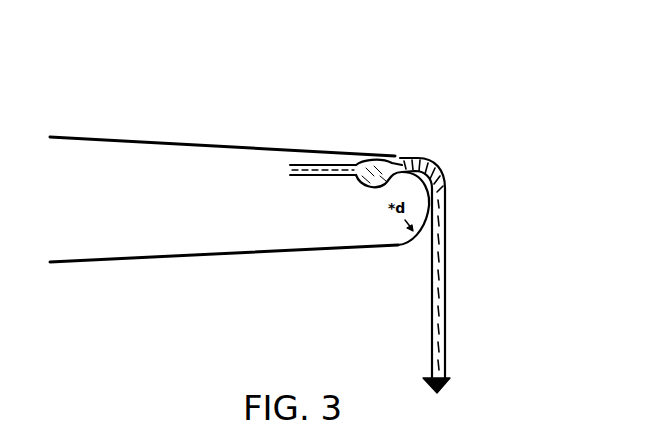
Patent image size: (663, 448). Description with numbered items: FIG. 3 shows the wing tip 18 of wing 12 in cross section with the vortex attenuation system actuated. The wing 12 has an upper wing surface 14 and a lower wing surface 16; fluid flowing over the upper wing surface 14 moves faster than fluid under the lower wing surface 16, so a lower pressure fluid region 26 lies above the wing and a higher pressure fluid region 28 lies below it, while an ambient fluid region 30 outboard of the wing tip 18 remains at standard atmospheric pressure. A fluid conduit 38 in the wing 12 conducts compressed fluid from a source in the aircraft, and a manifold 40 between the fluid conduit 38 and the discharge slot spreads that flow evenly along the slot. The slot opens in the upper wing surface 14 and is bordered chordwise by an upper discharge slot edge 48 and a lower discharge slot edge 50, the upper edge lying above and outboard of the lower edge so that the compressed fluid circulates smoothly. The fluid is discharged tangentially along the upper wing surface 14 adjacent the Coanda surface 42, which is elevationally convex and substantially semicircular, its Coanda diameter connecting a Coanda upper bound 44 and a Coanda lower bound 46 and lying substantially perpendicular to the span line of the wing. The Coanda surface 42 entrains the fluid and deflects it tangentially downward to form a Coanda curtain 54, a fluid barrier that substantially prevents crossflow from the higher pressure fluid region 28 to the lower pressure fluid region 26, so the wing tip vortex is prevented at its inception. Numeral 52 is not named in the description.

The wing 12 is at (97, 137).
The upper wing surface 14 is at (146, 143).
The lower wing surface 16 is at (127, 261).
The wing tip 18 is at (438, 228).
The lower pressure fluid region 26 is at (200, 90).
The higher pressure fluid region 28 is at (182, 322).
The ambient fluid region 30 is at (600, 213).
The fluid conduit 38 is at (300, 176).
The manifold 40 is at (365, 185).
The Coanda surface 42 is at (445, 195).
The Coanda upper bound 44 is at (404, 160).
The Coanda lower bound 46 is at (410, 244).
The upper discharge slot edge 48 is at (397, 156).
The lower discharge slot edge 50 is at (430, 172).
The outer skin 52 is at (425, 160).
The Coanda curtain 54 is at (443, 332).